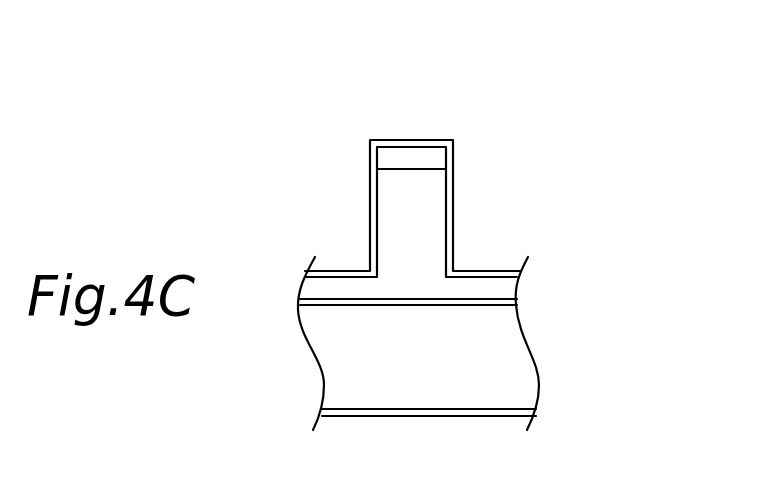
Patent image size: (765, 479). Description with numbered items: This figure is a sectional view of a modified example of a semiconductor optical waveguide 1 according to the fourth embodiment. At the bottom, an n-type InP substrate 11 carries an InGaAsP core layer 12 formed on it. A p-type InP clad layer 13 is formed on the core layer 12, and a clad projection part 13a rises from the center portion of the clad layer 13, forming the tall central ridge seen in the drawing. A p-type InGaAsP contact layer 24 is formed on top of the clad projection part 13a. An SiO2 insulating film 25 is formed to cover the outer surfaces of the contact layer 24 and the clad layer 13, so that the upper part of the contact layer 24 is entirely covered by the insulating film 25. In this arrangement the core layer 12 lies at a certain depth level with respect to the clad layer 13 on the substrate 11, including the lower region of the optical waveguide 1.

The optical waveguide 1 is at (580, 112).
The n-type InP substrate 11 is at (517, 363).
The InGaAsP core layer 12 is at (503, 296).
The p-type InP clad layer 13 is at (340, 287).
The clad projection part 13a is at (440, 207).
The p-type InGaAsP contact layer 24 is at (440, 153).
The SiO2 insulating film 25 is at (409, 140).